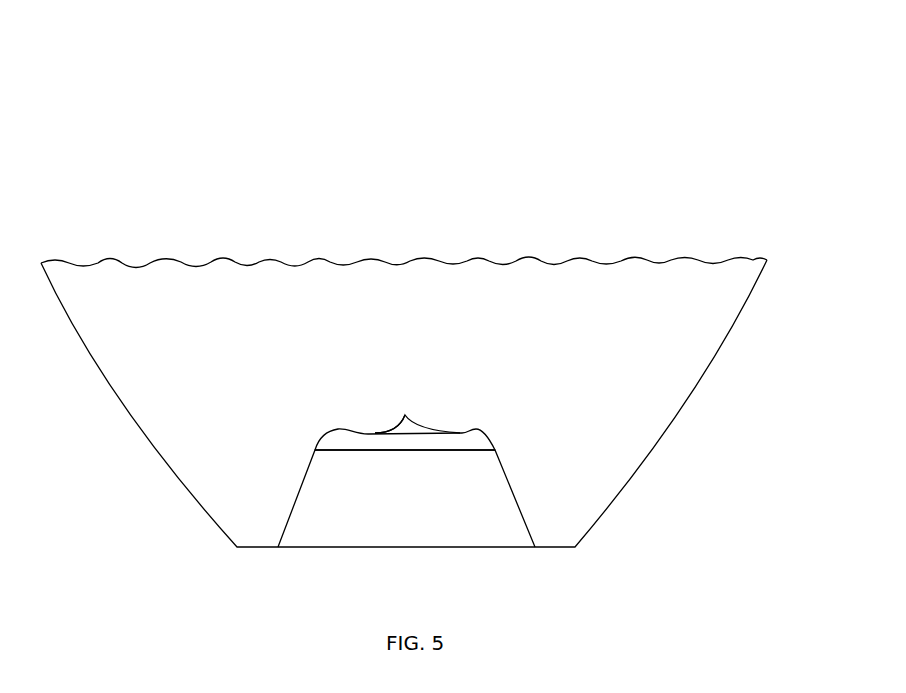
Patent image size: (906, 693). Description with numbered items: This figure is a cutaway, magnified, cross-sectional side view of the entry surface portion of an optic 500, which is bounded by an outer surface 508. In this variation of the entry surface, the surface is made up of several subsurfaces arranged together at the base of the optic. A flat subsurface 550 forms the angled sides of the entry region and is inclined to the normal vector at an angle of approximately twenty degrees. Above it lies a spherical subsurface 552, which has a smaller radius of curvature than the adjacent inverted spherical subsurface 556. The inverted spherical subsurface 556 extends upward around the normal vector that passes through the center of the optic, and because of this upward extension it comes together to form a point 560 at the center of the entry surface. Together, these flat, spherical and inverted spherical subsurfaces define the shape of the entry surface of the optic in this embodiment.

The optic 500 is at (602, 158).
The outer surface 508 is at (720, 345).
The flat subsurface 550 is at (512, 485).
The spherical subsurface 552 is at (482, 432).
The inverted spherical subsurface 556 is at (392, 425).
The point 560 is at (403, 417).